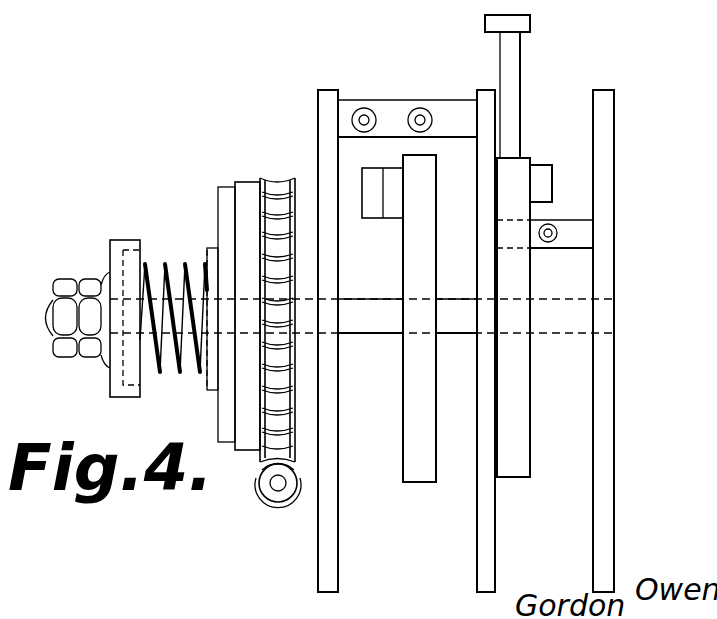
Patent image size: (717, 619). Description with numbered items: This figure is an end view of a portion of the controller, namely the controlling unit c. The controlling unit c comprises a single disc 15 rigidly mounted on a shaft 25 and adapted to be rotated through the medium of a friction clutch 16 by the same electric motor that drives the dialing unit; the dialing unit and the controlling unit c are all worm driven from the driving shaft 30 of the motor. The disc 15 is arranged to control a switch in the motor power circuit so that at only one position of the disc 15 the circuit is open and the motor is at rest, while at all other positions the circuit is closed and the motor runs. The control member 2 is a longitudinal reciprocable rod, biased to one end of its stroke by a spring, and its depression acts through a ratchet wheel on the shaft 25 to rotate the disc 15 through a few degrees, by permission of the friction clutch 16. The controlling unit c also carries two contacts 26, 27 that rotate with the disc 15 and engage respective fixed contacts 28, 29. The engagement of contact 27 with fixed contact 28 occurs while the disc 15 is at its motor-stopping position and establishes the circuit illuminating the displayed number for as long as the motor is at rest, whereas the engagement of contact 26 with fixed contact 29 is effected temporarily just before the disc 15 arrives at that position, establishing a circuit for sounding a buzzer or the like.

The control member 2 is at (330, 99).
The disc 15 is at (416, 472).
The friction clutch 16 is at (245, 393).
The shaft 25 is at (363, 322).
The contact 26 is at (373, 210).
The contact 27 is at (543, 190).
The fixed contact 28 is at (558, 232).
The fixed contact 29 is at (364, 106).
The driving shaft 30 is at (269, 492).
The controlling unit C is at (417, 97).